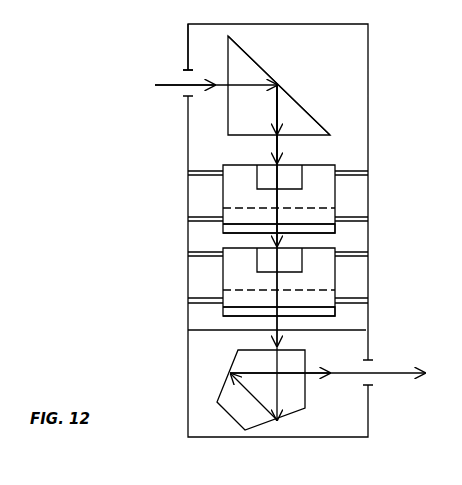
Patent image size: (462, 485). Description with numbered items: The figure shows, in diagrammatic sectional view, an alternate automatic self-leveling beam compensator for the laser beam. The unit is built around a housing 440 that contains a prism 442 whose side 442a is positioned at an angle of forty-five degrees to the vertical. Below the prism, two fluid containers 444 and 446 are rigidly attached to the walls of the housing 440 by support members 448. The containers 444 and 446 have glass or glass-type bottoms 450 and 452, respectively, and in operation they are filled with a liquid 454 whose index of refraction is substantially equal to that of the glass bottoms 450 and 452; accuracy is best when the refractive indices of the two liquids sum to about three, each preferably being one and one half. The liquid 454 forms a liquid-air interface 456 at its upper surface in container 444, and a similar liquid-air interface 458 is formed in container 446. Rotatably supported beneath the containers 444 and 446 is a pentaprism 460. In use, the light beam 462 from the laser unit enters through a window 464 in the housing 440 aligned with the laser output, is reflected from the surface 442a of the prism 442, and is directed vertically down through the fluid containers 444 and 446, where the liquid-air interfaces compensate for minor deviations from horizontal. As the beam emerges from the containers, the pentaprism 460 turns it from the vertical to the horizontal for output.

The housing 440 is at (370, 60).
The prism 442 is at (247, 68).
The prism side 442a is at (295, 108).
The fluid container 444 is at (336, 213).
The fluid container 446 is at (335, 284).
The support members 448 is at (202, 250).
The glass bottom 450 is at (335, 229).
The glass bottom 452 is at (323, 314).
The liquid 454 is at (322, 167).
The liquid-air interface 456 is at (315, 208).
The liquid-air interface 458 is at (240, 290).
The pentaprism 460 is at (292, 395).
The light beam 462 is at (176, 85).
The window 464 is at (188, 70).